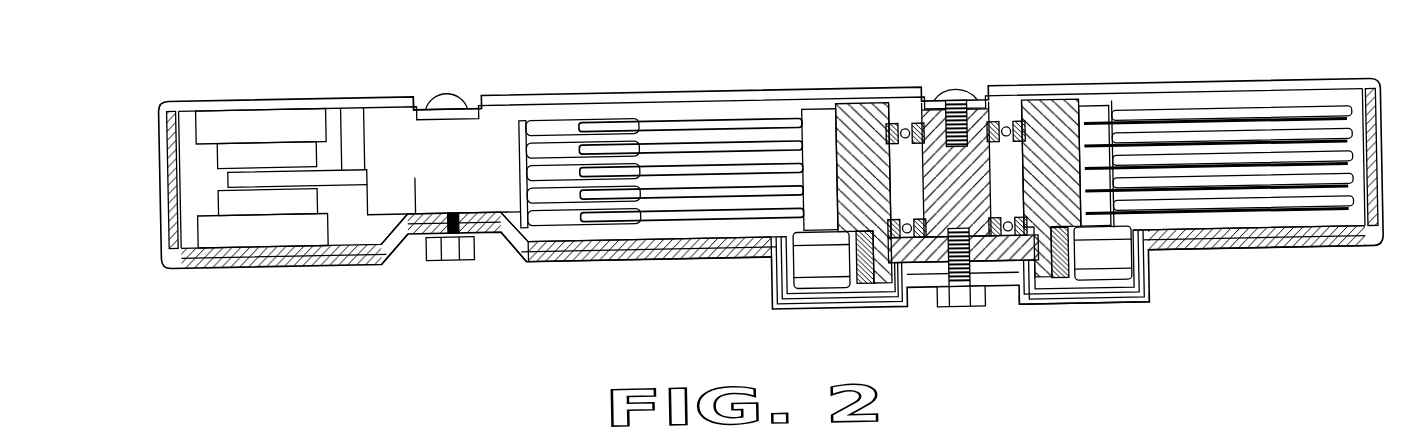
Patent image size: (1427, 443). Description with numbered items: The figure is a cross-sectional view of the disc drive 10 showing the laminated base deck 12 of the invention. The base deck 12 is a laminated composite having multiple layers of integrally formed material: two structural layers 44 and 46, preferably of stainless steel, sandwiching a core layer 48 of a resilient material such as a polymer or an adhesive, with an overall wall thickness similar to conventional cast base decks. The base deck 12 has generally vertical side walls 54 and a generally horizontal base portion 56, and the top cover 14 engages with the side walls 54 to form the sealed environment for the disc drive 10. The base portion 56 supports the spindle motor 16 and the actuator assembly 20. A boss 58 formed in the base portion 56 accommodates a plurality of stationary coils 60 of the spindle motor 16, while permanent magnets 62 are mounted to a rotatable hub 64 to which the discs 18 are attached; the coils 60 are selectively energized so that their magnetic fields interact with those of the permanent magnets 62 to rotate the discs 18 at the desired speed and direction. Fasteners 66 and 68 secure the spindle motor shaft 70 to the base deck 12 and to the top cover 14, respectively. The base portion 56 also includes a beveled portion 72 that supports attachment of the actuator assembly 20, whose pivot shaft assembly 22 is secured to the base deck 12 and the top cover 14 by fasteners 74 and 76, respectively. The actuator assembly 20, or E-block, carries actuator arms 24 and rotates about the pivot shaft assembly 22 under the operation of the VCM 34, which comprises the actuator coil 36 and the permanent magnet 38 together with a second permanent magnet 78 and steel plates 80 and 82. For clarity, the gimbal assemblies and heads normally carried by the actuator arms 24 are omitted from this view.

The disc drive 10 is at (327, 53).
The base deck 12 is at (268, 252).
The top cover 14 is at (705, 89).
The spindle motor 16 is at (1047, 53).
The discs 18 is at (1343, 128).
The actuator assembly 20 is at (415, 207).
The pivot shaft assembly 22 is at (432, 81).
The actuator arms 24 is at (540, 114).
The VCM 34 is at (205, 164).
The actuator coil 36 is at (345, 92).
The permanent magnet 38 is at (283, 194).
The structural layer 44 is at (1190, 261).
The structural layer 46 is at (1245, 249).
The core layer 48 is at (1210, 255).
The side walls 54 is at (162, 184).
The base portion 56 is at (612, 260).
The boss 58 is at (1100, 306).
The stationary coils 60 is at (820, 263).
The permanent magnets 62 is at (862, 272).
The rotatable hub 64 is at (878, 107).
The fastener 66 is at (990, 259).
The fastener 68 is at (960, 94).
The spindle motor shaft 70 is at (962, 304).
The beveled portion 72 is at (490, 235).
The fastener 74 is at (451, 255).
The fastener 76 is at (450, 94).
The second permanent magnet 78 is at (230, 145).
The steel plate 80 is at (273, 118).
The steel plate 82 is at (222, 222).